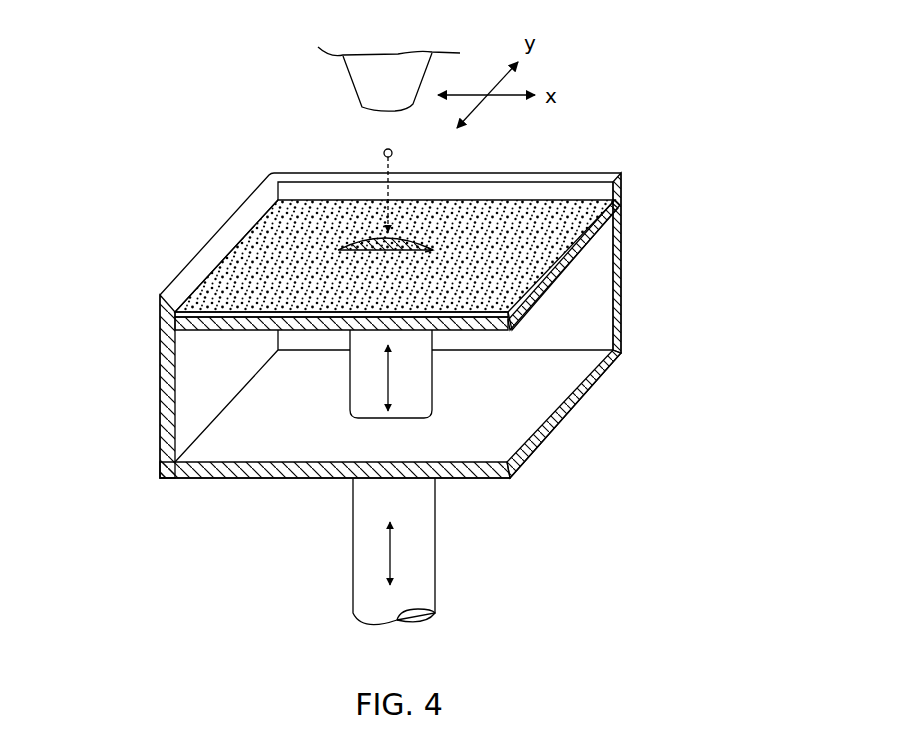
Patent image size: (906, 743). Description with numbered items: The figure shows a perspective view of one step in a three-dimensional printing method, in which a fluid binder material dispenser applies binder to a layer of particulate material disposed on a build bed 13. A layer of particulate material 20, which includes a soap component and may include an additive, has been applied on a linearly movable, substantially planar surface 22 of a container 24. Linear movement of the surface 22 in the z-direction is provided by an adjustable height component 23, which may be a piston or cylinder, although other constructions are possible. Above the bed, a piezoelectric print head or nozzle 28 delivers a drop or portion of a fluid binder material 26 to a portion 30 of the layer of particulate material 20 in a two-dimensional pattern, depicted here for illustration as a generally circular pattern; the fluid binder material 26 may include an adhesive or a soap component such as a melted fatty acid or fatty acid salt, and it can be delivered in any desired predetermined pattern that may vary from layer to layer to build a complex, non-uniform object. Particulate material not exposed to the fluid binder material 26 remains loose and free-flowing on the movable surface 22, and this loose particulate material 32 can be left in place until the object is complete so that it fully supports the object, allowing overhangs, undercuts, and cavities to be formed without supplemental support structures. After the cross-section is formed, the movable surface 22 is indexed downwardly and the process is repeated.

The build bed 13 is at (130, 203).
The particulate material 20 is at (486, 206).
The substantially planar surface 22 is at (570, 262).
The adjustable height component 23 is at (432, 387).
The container 24 is at (614, 203).
The fluid binder material 26 is at (384, 151).
The piezoelectric print head or nozzle 28 is at (432, 70).
The portion of the layer of particulate material 30 is at (433, 244).
The loose particulate material 32 is at (340, 236).